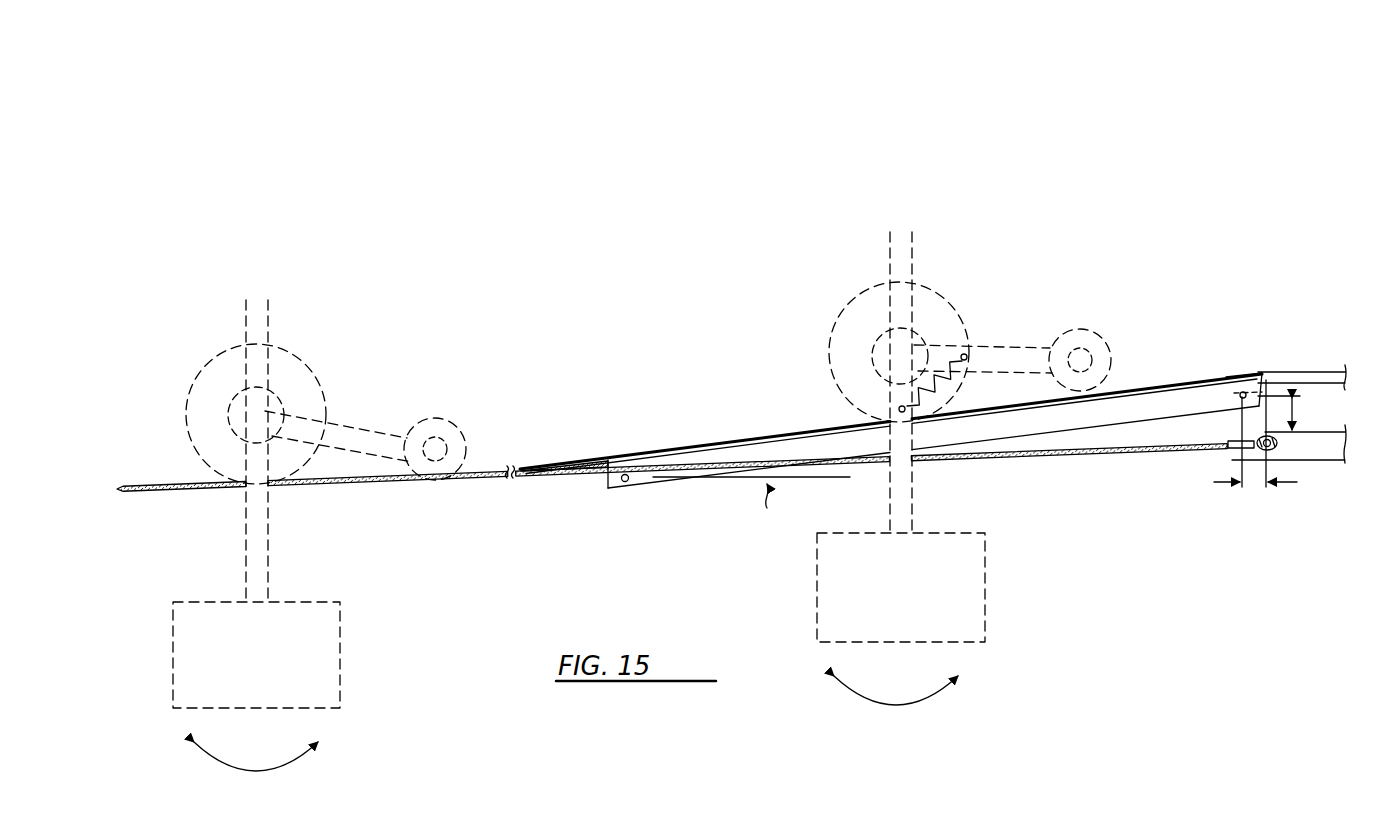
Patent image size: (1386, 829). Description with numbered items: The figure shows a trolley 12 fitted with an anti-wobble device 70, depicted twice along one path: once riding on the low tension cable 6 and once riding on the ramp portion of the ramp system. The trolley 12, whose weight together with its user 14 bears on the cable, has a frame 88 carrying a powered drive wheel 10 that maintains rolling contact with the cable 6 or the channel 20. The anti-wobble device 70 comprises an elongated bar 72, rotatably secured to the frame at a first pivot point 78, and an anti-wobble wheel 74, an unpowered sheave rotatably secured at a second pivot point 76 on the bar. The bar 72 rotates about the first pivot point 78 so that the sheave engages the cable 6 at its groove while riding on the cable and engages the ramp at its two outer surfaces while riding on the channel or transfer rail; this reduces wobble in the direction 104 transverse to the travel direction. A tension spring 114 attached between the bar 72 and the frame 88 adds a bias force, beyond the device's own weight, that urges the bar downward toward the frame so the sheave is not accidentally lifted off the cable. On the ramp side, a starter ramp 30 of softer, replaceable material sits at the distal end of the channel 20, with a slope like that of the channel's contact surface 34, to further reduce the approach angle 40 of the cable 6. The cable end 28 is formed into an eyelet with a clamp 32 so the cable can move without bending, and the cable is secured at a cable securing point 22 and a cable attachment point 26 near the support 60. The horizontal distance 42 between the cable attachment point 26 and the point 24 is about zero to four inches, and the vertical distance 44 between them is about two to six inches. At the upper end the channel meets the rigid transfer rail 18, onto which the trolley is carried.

The low tension cable 6 is at (356, 487).
The drive wheel 10 is at (302, 363).
The trolley 12 is at (631, 620).
The user 14 is at (342, 661).
The transfer rail 18 is at (1300, 372).
The channel 20 is at (1127, 424).
The cable securing point 22 is at (628, 489).
The point 24 is at (1228, 380).
The cable attachment point 26 is at (1280, 448).
The cable end 28 is at (1250, 463).
The starter ramp 30 is at (590, 459).
The clamp 32 is at (1230, 464).
The contact surface 34 is at (667, 450).
The approach angle 40 is at (763, 432).
The horizontal distance 42 is at (1268, 472).
The vertical distance 44 is at (1298, 400).
The support 60 is at (1338, 463).
The anti-wobble device 70 is at (703, 363).
The elongated bar 72 is at (362, 425).
The anti-wobble wheel 74 is at (452, 422).
The second pivot point 76 is at (432, 438).
The first pivot point 78 is at (252, 410).
The frame 88 is at (258, 302).
The direction 104 is at (296, 770).
The tension spring 114 is at (948, 402).